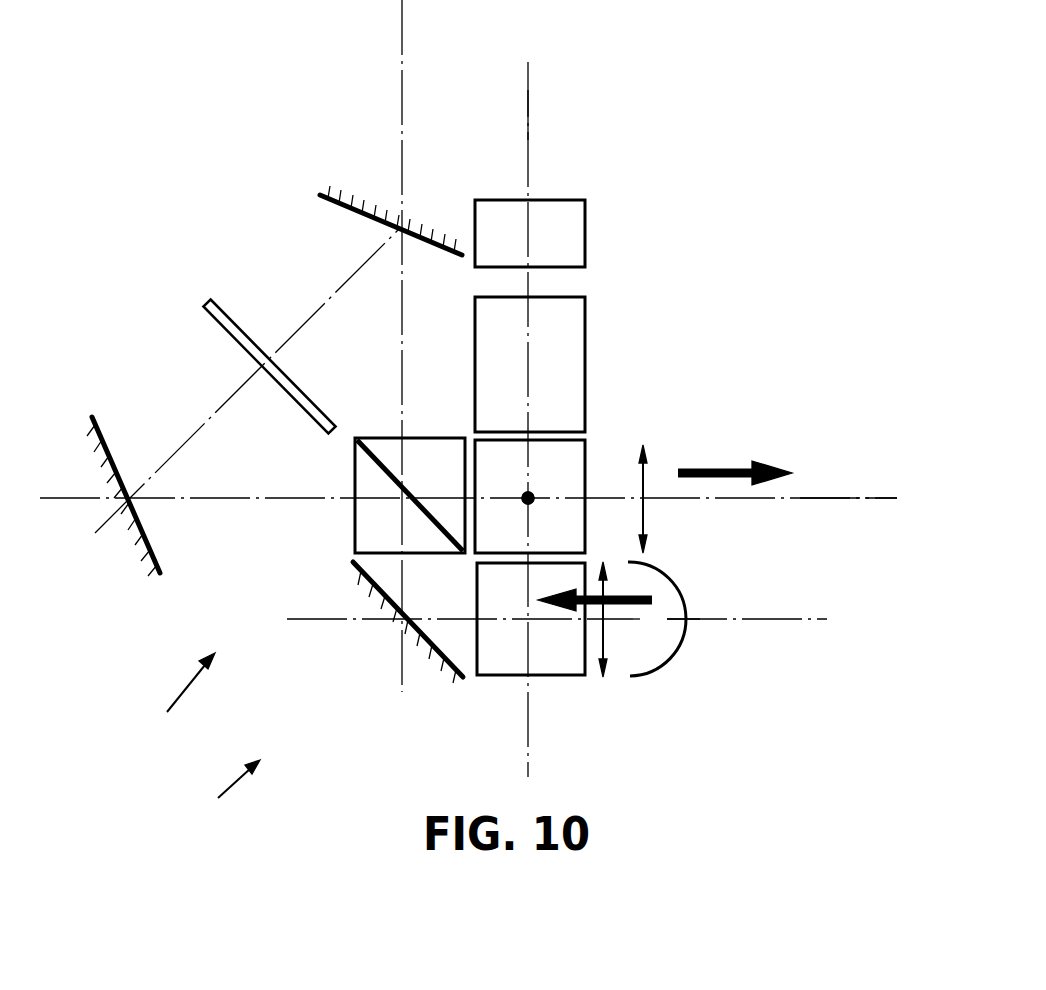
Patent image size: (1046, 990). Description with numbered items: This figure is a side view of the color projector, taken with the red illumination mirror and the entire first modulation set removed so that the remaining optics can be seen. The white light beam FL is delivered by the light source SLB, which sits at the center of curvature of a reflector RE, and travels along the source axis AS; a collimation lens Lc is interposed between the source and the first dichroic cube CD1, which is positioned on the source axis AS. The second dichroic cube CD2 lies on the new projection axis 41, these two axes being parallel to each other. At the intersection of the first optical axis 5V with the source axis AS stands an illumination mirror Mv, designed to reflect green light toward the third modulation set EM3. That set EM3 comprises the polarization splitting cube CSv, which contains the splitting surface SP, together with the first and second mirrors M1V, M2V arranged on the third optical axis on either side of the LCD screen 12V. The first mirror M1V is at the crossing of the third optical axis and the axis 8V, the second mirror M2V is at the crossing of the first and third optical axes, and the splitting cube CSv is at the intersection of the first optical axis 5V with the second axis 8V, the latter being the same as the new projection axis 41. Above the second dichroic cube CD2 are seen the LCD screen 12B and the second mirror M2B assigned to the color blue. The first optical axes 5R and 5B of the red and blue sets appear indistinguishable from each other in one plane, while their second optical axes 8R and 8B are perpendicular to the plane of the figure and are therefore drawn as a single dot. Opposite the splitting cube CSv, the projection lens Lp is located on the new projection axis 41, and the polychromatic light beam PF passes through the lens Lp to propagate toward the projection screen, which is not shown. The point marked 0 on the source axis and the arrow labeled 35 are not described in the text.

The first optical axis 5V is at (400, 62).
The first optical axis of the second modulation set 5B is at (527, 90).
The first optical axis of the first modulation set 5R is at (527, 113).
The second axis 8V is at (233, 498).
The second optical axis of the first modulation set 8R is at (580, 443).
The second optical axis of the second modulation set 8B is at (532, 496).
The new projection axis 41 is at (827, 498).
The source axis AS is at (747, 621).
The origin point 0 is at (648, 620).
The first mirror M1V is at (158, 573).
The second mirror M2V is at (322, 197).
The illumination mirror Mv is at (353, 568).
The LCD screen 12V is at (203, 320).
The polarization splitting cube CSv is at (355, 472).
The splitting surface SP is at (377, 452).
The second mirror M2B is at (585, 250).
The LCD screen 12B is at (585, 342).
The second dichroic cube CD2 is at (473, 445).
The first dichroic cube CD1 is at (513, 677).
The projection lens Lp is at (647, 482).
The collimation lens Lc is at (607, 647).
The polychromatic light beam PF is at (727, 465).
The white light beam FL is at (595, 590).
The reflector RE is at (672, 578).
The light source SLB is at (658, 638).
The third modulation set EM3 is at (168, 698).
The direction arrow 35 is at (221, 791).